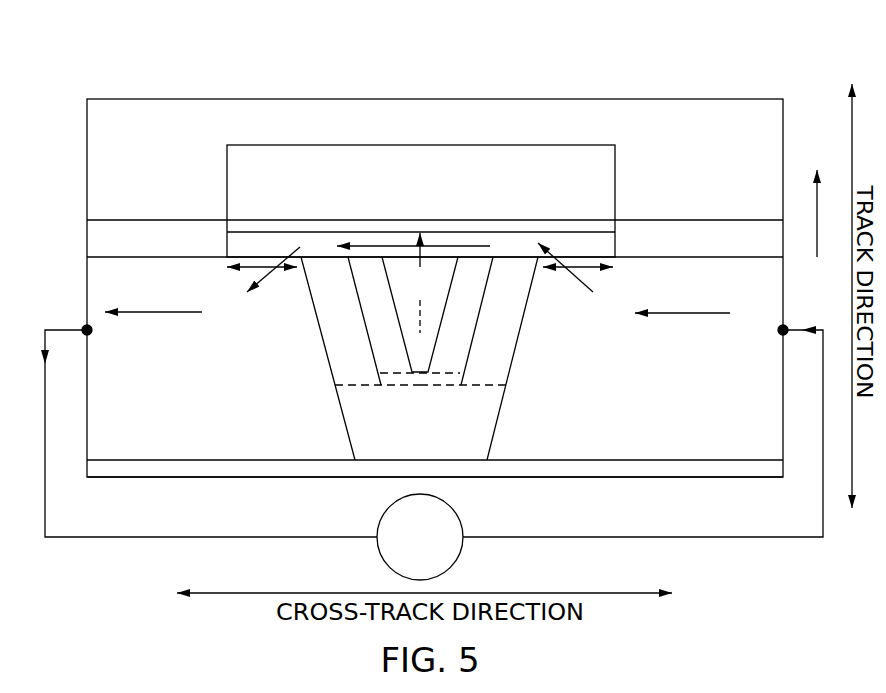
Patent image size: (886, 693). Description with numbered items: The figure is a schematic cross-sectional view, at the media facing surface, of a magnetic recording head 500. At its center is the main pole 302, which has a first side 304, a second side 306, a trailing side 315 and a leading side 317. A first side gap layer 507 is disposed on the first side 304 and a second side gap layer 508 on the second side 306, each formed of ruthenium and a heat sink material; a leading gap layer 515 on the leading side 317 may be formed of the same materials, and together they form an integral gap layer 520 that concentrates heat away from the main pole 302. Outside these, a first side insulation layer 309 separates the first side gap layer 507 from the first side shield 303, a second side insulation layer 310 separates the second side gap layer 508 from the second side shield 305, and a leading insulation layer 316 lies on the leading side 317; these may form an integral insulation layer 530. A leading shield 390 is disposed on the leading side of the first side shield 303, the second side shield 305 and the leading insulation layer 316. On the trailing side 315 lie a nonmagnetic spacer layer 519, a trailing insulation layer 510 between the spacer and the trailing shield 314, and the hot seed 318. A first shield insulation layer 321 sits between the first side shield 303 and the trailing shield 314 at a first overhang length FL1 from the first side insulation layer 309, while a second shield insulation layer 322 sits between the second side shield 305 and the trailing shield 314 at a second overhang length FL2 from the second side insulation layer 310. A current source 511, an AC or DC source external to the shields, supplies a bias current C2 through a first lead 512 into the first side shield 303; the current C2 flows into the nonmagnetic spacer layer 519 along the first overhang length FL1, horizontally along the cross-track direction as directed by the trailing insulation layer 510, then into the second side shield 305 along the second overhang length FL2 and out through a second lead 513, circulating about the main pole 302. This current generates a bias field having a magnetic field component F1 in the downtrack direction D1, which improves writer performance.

The magnetic recording head 500 is at (115, 47).
The trailing shield 314 is at (712, 164).
The hot seed 318 is at (322, 184).
The trailing side 315 is at (421, 202).
The trailing insulation layer 510 is at (580, 227).
The nonmagnetic spacer layer 519 is at (520, 243).
The second shield insulation layer 322 is at (152, 251).
The first shield insulation layer 321 is at (722, 254).
The leading insulation layer 316 is at (419, 441).
The main pole 302 is at (444, 296).
The second side gap layer 508 is at (377, 313).
The first side gap layer 507 is at (463, 313).
The second side insulation layer 310 is at (347, 358).
The first side insulation layer 309 is at (493, 358).
The leading gap layer 515 is at (420, 380).
The integral gap layer 520 is at (458, 384).
The integral insulation layer 530 is at (472, 433).
The leading side 317 is at (437, 397).
The second side 306 is at (297, 318).
The first side 304 is at (565, 300).
The second side shield 305 is at (182, 399).
The first side shield 303 is at (692, 419).
The leading shield 390 is at (692, 468).
The first lead 512 is at (790, 328).
The second lead 513 is at (83, 329).
The current source 511 is at (387, 567).
The downtrack direction D1 is at (817, 203).
The first overhang length FL1 is at (585, 268).
The second overhang length FL2 is at (257, 266).
The magnetic field component F1 is at (420, 263).
The current C2 is at (381, 244).